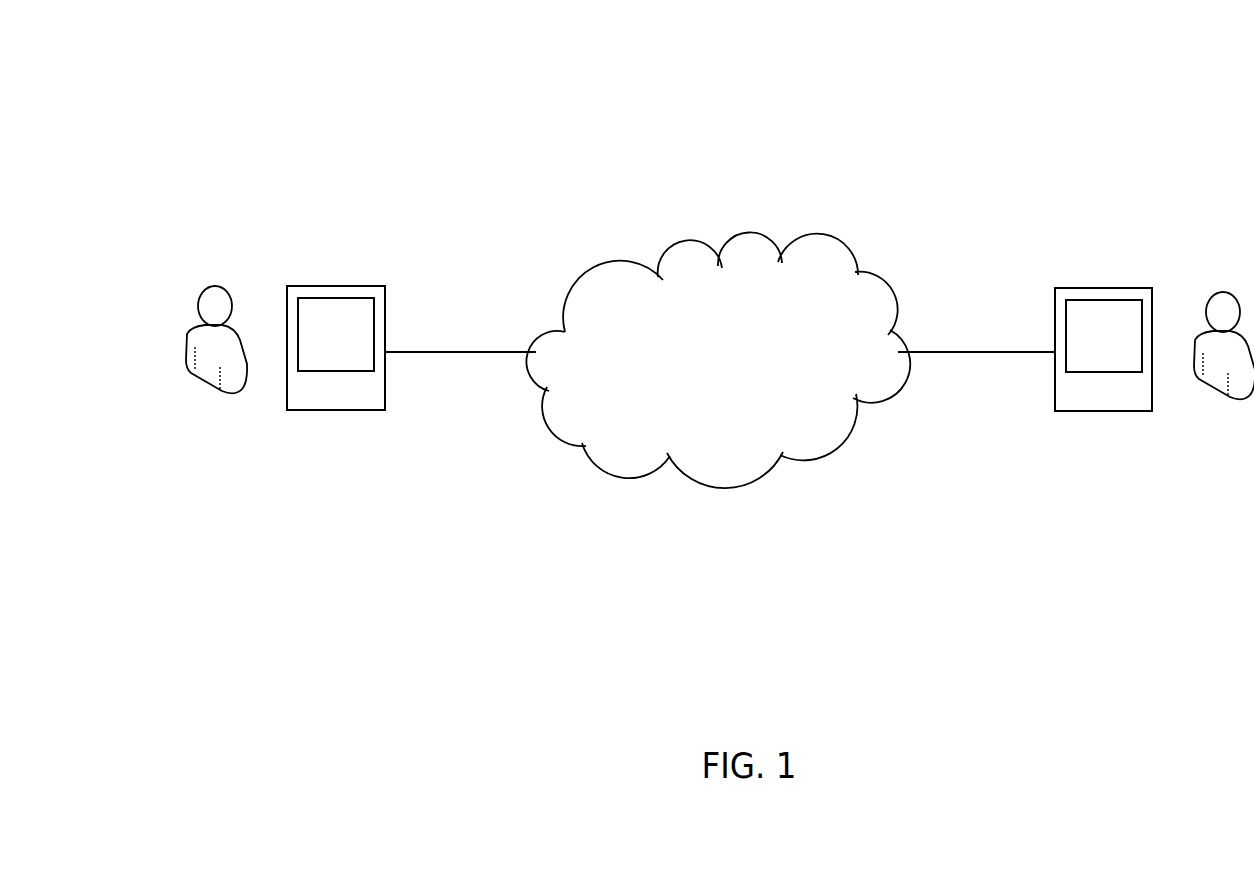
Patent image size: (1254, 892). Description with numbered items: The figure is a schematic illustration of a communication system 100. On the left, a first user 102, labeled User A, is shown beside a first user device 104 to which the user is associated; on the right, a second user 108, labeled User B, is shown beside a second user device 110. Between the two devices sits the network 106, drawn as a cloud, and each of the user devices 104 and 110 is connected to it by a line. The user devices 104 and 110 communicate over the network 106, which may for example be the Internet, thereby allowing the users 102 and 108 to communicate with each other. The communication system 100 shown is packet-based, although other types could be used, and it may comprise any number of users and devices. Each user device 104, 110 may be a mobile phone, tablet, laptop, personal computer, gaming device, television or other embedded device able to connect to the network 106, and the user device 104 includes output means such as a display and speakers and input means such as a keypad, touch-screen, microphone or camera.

The communication system 100 is at (322, 132).
The first user 102 is at (213, 287).
The first user device 104 is at (333, 411).
The network 106 is at (817, 242).
The second user 108 is at (1223, 292).
The second user device 110 is at (1100, 411).